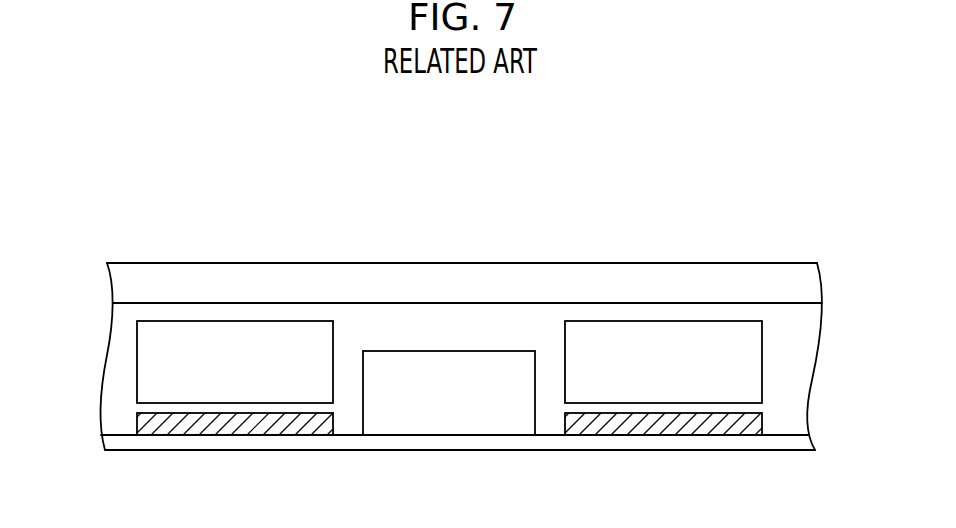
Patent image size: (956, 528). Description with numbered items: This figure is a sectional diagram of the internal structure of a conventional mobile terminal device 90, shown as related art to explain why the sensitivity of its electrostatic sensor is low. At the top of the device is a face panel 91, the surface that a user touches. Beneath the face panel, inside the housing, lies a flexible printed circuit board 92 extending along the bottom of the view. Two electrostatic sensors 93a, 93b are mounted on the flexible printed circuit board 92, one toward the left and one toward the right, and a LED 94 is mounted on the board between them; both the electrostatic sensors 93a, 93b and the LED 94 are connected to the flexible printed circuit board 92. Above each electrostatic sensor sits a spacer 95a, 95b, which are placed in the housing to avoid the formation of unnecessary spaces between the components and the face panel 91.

The mobile terminal device 90 is at (512, 244).
The face panel 91 is at (641, 272).
The flexible printed circuit board 92 is at (513, 443).
The electrostatic sensor 93a is at (252, 428).
The electrostatic sensor 93b is at (663, 428).
The LED 94 is at (437, 428).
The spacer 95a is at (148, 355).
The spacer 95b is at (750, 380).